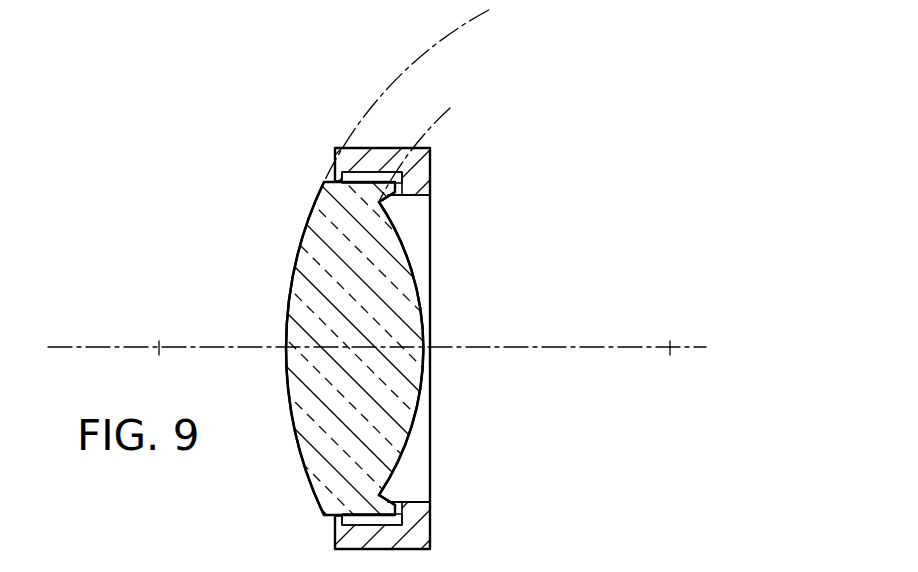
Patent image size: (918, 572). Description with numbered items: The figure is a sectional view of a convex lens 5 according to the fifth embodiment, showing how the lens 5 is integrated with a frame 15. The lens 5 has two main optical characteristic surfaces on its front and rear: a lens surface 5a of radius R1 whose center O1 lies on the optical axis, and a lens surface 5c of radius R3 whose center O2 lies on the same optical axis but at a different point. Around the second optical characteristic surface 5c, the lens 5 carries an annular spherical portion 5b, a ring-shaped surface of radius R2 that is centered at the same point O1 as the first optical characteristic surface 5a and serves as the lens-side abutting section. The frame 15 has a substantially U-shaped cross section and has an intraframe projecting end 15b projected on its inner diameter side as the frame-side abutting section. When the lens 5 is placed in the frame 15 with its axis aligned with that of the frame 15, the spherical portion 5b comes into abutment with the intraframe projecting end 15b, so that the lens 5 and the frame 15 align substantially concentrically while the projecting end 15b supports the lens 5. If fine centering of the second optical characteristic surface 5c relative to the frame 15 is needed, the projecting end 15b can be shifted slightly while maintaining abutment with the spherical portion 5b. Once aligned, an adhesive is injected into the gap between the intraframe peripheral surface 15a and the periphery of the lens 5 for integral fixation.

The convex lens 5 is at (280, 216).
The lens surface of radius R1 5a is at (291, 284).
The spherical portion 5b is at (388, 201).
The lens surface of radius R3 5c is at (424, 330).
The frame 15 is at (336, 129).
The intraframe peripheral surface 15a is at (380, 166).
The intraframe projecting end 15b is at (394, 195).
The radius of the first optical characteristic surface R1 is at (670, 348).
The radius of the ring-shaped surface R2 is at (670, 348).
The radius of the second optical characteristic surface R3 is at (159, 347).
The center of the first optical characteristic surface O1 is at (674, 366).
The center of the second optical characteristic surface O2 is at (162, 364).